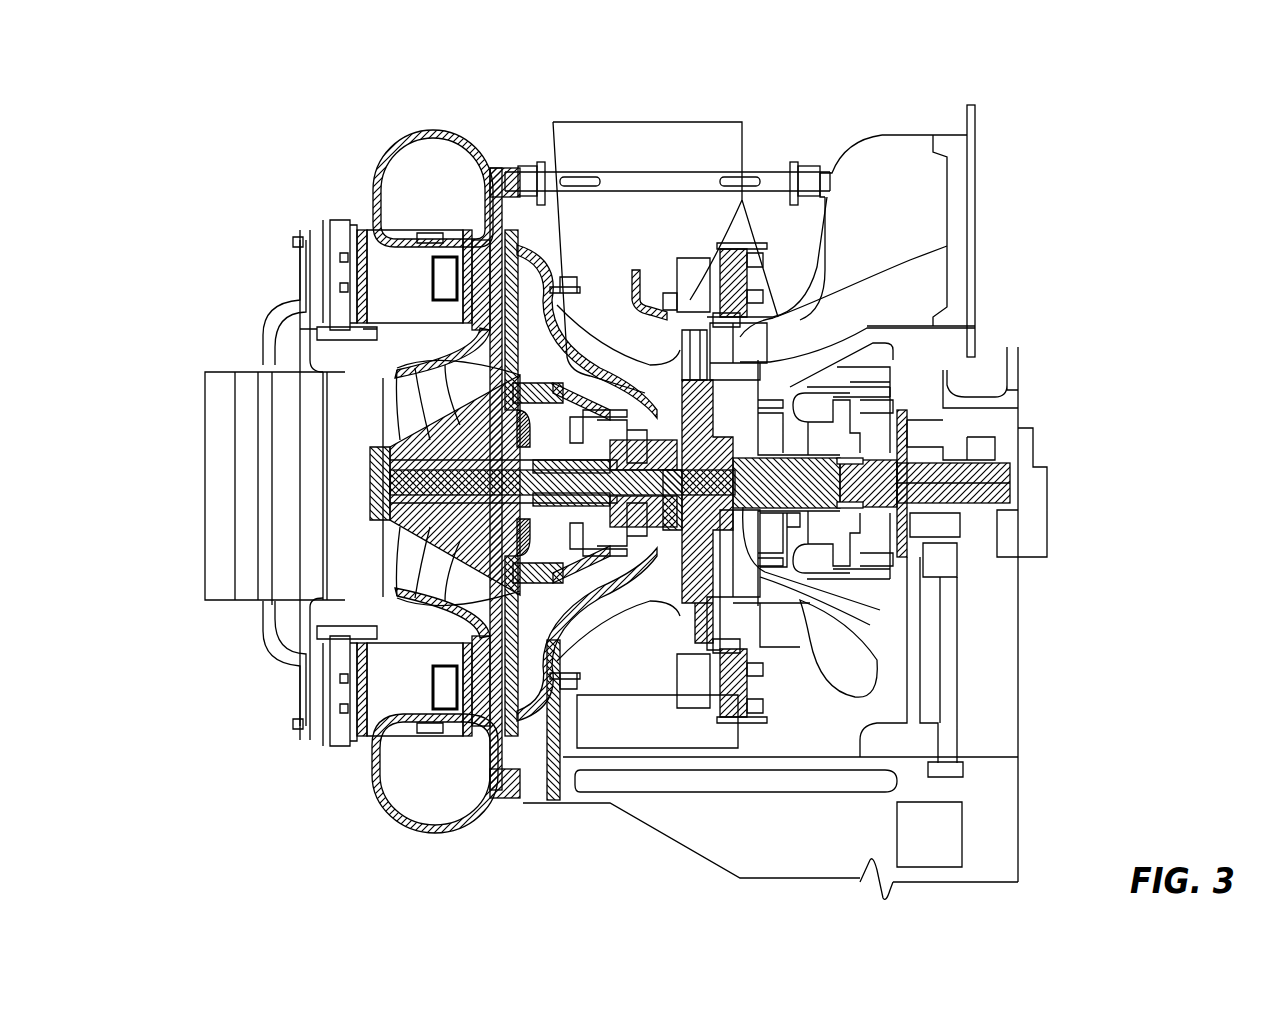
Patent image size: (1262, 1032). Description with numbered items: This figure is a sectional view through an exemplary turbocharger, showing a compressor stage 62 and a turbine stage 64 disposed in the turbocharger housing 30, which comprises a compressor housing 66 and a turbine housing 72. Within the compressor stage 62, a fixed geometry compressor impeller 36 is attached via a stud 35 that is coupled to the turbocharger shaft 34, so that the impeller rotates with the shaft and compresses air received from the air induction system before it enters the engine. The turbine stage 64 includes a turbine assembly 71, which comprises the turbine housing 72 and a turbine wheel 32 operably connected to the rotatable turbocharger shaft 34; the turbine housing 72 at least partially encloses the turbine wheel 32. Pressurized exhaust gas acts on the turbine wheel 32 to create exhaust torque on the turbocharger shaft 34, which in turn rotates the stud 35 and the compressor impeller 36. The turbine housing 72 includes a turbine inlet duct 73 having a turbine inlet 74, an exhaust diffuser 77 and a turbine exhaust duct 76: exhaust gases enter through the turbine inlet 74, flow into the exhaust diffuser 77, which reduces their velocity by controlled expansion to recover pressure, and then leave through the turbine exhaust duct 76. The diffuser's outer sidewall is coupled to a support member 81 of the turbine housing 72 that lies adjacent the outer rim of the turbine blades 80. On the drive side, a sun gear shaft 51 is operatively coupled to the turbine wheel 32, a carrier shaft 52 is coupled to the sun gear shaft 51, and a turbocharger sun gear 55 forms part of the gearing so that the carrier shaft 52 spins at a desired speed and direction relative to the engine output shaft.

The turbocharger housing 30 is at (747, 105).
The turbine wheel 32 is at (718, 430).
The turbocharger shaft 34 is at (628, 560).
The stud 35 is at (480, 552).
The compressor impeller 36 is at (430, 440).
The sun gear shaft 51 is at (800, 580).
The carrier shaft 52 is at (1033, 468).
The turbocharger sun gear 55 is at (883, 462).
The compressor stage 62 is at (432, 100).
The turbine stage 64 is at (982, 97).
The compressor housing 66 is at (400, 128).
The turbine assembly 71 is at (852, 125).
The turbine housing 72 is at (757, 140).
The turbine inlet duct 73 is at (903, 135).
The turbine inlet 74 is at (975, 190).
The turbine exhaust duct 76 is at (613, 158).
The exhaust diffuser 77 is at (650, 290).
The turbine blades 80 is at (830, 305).
The support member 81 is at (710, 298).